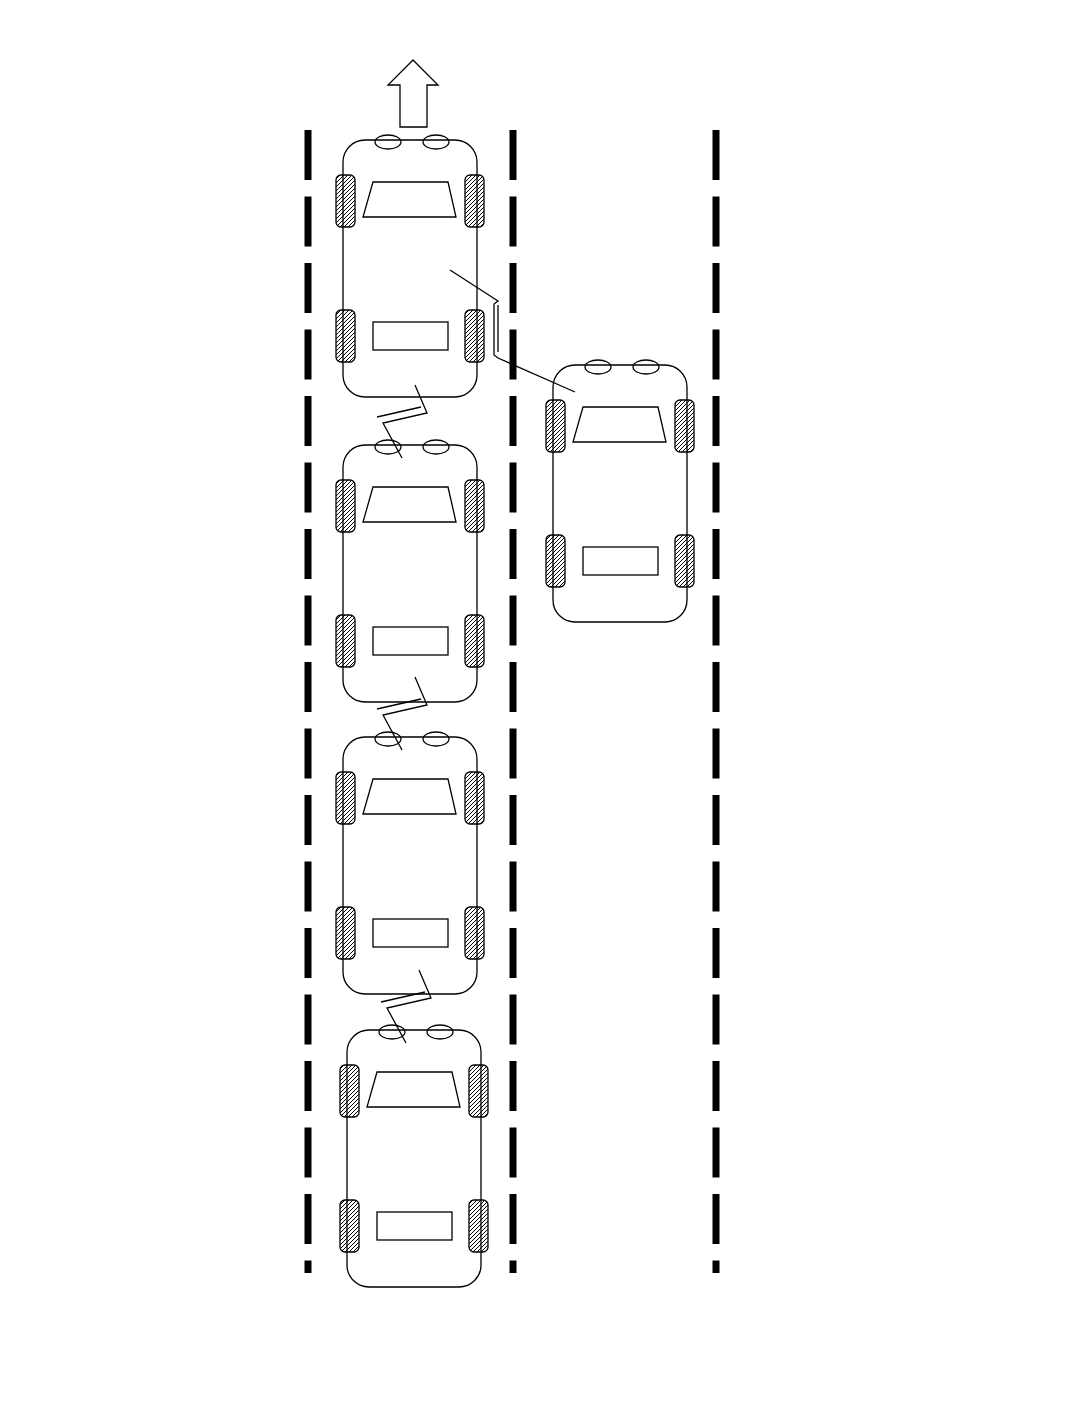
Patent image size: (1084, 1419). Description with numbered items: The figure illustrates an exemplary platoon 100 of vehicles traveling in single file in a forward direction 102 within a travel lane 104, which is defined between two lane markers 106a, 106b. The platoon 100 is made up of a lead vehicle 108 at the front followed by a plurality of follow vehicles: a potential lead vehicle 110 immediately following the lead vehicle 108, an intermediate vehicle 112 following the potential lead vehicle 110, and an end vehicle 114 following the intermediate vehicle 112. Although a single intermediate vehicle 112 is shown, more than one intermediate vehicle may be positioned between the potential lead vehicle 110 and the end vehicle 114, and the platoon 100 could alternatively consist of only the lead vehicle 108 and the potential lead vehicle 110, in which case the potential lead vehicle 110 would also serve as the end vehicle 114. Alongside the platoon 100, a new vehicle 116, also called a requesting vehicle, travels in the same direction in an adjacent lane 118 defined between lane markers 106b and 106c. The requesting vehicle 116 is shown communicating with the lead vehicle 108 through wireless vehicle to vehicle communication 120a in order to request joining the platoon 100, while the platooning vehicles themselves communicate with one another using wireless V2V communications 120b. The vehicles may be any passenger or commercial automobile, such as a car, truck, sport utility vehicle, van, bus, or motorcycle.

The platoon 100 is at (253, 437).
The forward direction 102 is at (398, 87).
The travel lane 104 is at (488, 1002).
The lane marker 106a is at (305, 147).
The lane marker 106b is at (517, 155).
The lane marker 106c is at (720, 147).
The lead vehicle 108 is at (370, 293).
The potential lead vehicle 110 is at (368, 593).
The intermediate vehicle 112 is at (370, 880).
The end vehicle 114 is at (378, 1167).
The new vehicle 116 is at (643, 492).
The lane 118 is at (655, 842).
The wireless vehicle to vehicle communication 120a is at (502, 318).
The wireless V2V communications 120b is at (425, 712).